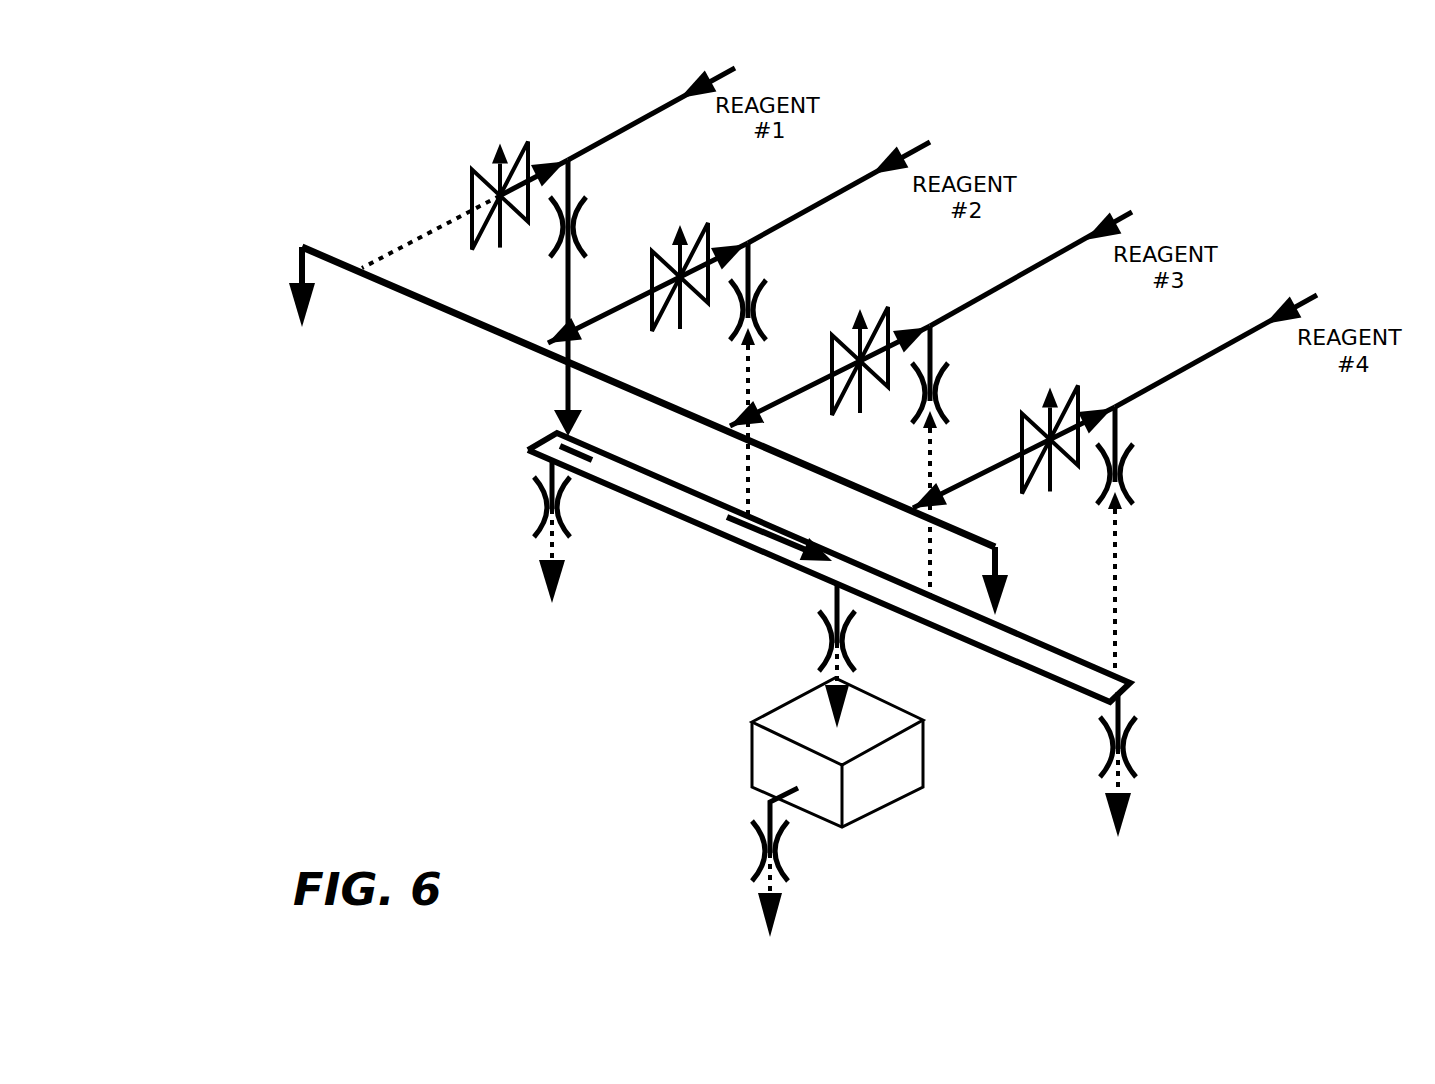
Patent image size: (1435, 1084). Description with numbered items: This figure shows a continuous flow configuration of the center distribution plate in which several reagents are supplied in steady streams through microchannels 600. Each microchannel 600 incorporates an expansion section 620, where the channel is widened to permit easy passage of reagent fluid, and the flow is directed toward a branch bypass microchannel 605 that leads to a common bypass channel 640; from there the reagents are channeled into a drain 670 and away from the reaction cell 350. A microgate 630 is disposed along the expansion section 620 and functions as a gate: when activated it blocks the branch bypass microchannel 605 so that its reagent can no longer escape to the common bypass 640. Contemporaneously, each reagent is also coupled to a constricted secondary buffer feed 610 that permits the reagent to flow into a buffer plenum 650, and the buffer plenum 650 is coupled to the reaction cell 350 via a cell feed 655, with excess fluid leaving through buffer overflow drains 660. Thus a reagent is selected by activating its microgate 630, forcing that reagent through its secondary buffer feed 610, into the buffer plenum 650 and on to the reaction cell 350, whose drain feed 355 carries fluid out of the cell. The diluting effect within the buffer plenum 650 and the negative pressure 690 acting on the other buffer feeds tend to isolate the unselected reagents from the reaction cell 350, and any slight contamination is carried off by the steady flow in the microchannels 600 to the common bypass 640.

The microchannel 600 is at (626, 142).
The branch bypass microchannel 605 is at (400, 246).
The constricted secondary buffer feed 610 is at (584, 236).
The expansion section 620 is at (441, 169).
The microgate 630 is at (470, 196).
The common bypass channel 640 is at (452, 322).
The buffer plenum 650 is at (737, 542).
The cell feed 655 is at (847, 650).
The buffer overflow drain 660 is at (568, 530).
The drain 670 is at (300, 262).
The negative pressure 690 is at (750, 372).
The reaction cell 350 is at (925, 750).
The drain feed 355 is at (778, 864).